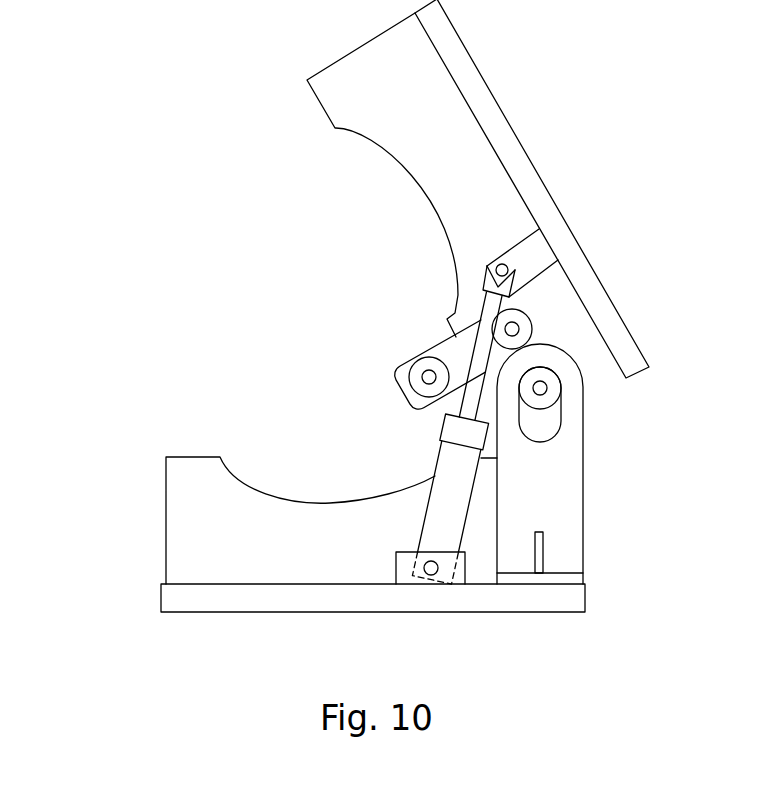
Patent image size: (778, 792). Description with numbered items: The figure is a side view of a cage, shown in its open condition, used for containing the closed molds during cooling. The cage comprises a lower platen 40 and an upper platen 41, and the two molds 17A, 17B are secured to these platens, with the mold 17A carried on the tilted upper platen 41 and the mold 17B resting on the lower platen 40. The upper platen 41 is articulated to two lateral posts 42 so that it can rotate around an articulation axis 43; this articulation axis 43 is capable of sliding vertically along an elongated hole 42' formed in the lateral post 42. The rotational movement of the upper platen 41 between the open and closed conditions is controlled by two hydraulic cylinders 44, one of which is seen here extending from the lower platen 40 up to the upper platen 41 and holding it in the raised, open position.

The mold 17A is at (367, 68).
The mold 17B is at (190, 514).
The lower platen 40 is at (229, 600).
The upper platen 41 is at (515, 150).
The lateral post 42 is at (599, 464).
The elongated hole 42' is at (613, 420).
The articulation axis 43 is at (552, 388).
The hydraulic cylinder 44 is at (448, 520).